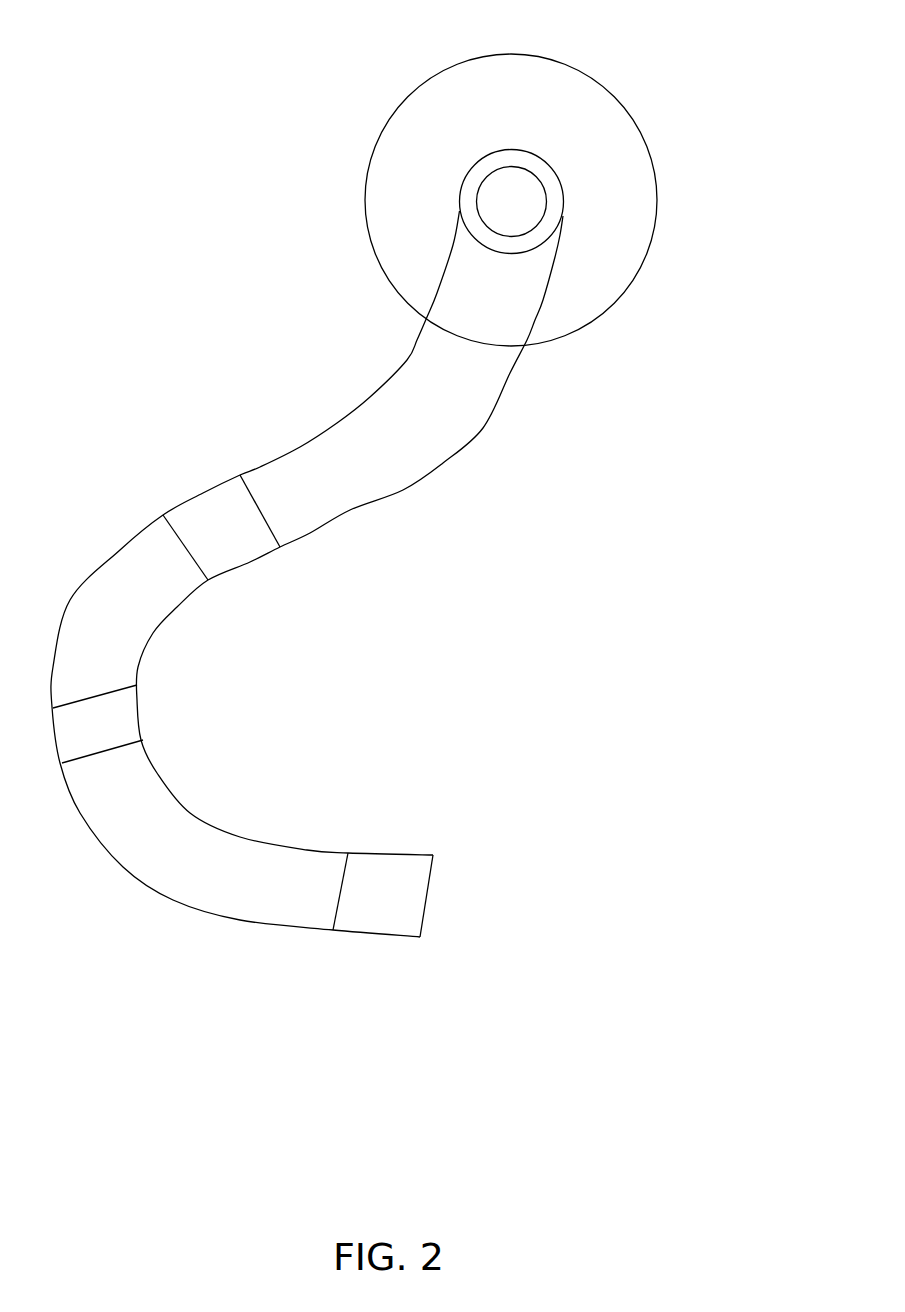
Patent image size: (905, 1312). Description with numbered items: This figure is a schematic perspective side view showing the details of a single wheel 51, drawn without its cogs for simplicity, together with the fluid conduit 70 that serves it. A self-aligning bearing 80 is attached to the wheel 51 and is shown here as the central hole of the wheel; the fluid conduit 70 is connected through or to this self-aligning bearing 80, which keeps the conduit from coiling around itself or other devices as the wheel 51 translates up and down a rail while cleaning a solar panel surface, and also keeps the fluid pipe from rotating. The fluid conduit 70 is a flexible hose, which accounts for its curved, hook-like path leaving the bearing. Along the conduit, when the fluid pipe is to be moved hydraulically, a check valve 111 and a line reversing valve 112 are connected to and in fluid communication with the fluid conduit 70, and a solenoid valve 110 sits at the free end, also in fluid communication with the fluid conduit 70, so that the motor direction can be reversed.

The wheel 51 is at (600, 132).
The self-aligning bearing 80 is at (548, 203).
The fluid conduit 70 is at (483, 428).
The check valve 111 is at (247, 567).
The line reversing valve 112 is at (143, 708).
The solenoid valve 110 is at (398, 853).